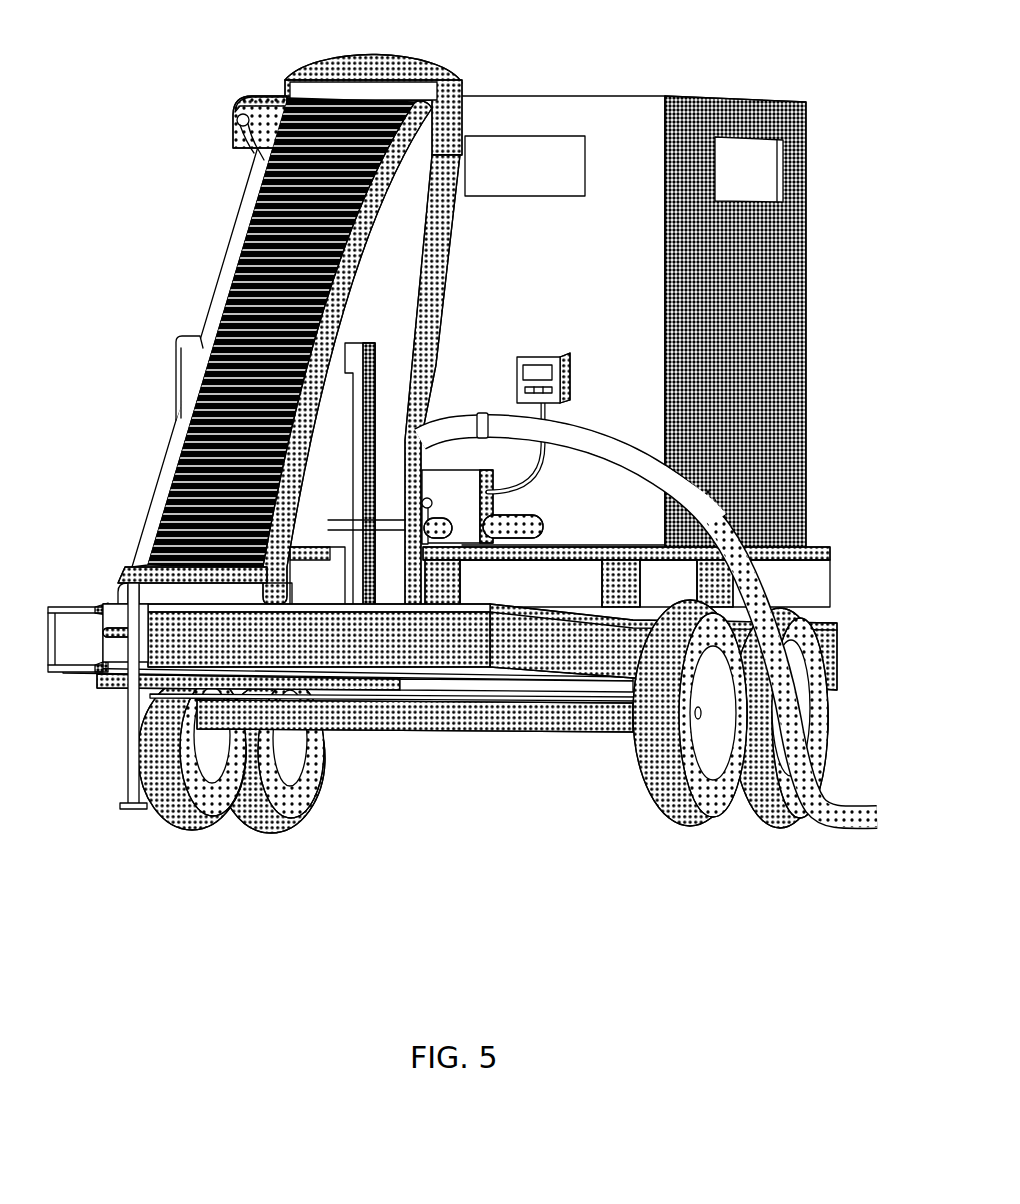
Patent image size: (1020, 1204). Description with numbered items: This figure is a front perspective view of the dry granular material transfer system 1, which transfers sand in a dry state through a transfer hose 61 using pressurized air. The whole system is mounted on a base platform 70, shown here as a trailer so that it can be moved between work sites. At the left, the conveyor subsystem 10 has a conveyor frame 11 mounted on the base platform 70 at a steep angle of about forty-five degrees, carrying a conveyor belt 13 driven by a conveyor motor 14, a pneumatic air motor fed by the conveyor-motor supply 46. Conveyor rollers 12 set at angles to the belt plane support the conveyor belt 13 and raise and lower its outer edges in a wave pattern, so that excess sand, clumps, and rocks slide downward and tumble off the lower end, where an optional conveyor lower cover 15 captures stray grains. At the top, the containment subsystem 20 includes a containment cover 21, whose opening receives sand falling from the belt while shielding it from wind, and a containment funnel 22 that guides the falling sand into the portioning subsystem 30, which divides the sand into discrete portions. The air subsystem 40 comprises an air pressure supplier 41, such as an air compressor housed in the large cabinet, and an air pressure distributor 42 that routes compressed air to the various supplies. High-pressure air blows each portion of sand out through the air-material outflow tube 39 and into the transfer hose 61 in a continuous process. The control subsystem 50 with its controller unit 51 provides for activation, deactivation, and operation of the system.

The dry granular material transfer system 1 is at (128, 26).
The conveyor subsystem 10 is at (185, 93).
The conveyor frame 11 is at (289, 578).
The conveyor rollers 12 is at (302, 455).
The conveyor belt 13 is at (228, 293).
The conveyor motor 14 is at (250, 97).
The conveyor lower cover 15 is at (124, 586).
The containment subsystem 20 is at (388, 44).
The containment cover 21 is at (463, 88).
The containment funnel 22 is at (441, 268).
The portioning subsystem 30 is at (391, 511).
The air-material outflow tube 39 is at (478, 422).
The air subsystem 40 is at (587, 57).
The air pressure supplier 41 is at (641, 102).
The air pressure distributor 42 is at (460, 473).
The conveyor-motor supply 46 is at (255, 151).
The control subsystem 50 is at (543, 334).
The controller unit 51 is at (570, 366).
The transfer hose 61 is at (732, 508).
The base platform 70 is at (112, 697).